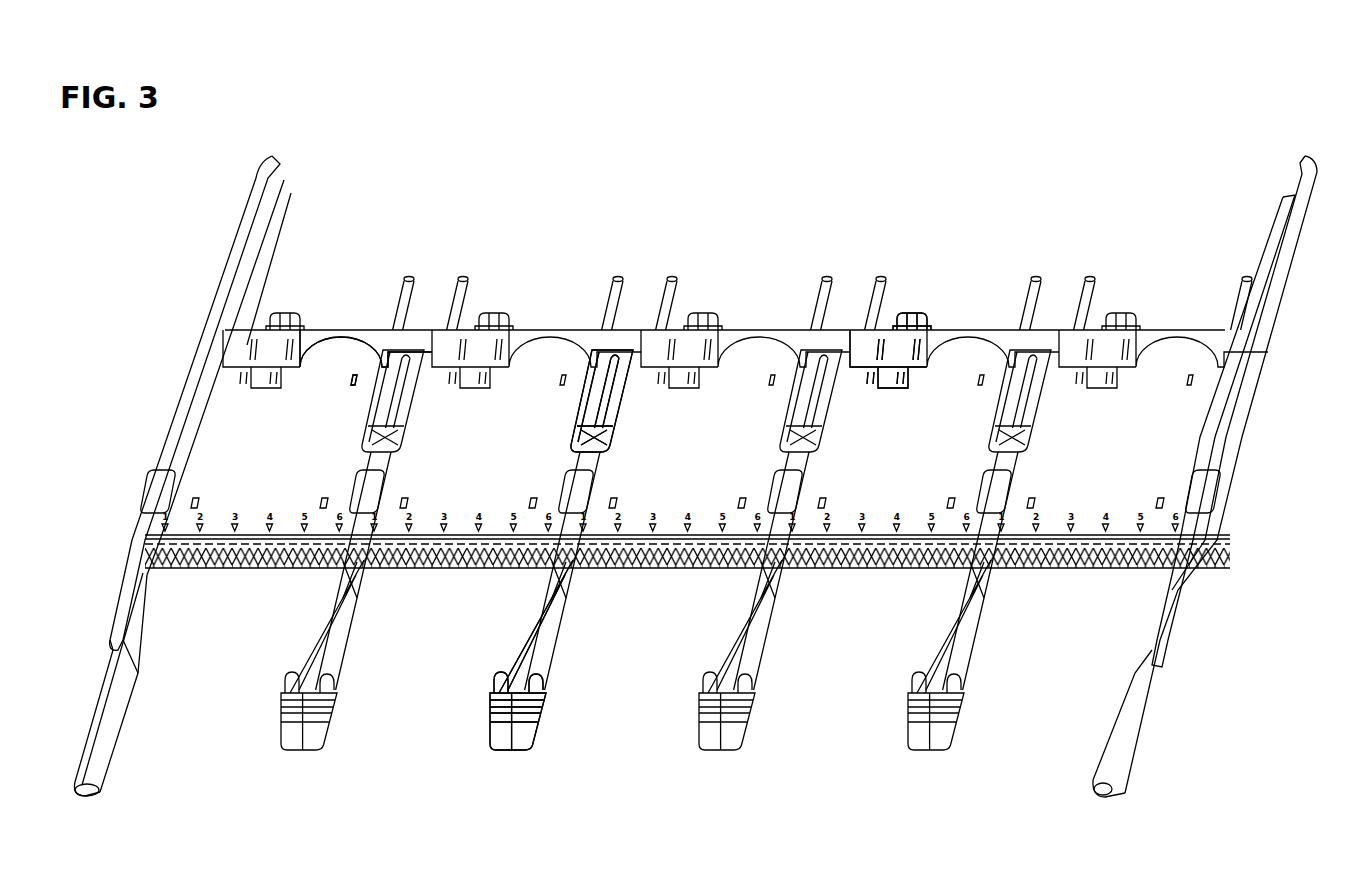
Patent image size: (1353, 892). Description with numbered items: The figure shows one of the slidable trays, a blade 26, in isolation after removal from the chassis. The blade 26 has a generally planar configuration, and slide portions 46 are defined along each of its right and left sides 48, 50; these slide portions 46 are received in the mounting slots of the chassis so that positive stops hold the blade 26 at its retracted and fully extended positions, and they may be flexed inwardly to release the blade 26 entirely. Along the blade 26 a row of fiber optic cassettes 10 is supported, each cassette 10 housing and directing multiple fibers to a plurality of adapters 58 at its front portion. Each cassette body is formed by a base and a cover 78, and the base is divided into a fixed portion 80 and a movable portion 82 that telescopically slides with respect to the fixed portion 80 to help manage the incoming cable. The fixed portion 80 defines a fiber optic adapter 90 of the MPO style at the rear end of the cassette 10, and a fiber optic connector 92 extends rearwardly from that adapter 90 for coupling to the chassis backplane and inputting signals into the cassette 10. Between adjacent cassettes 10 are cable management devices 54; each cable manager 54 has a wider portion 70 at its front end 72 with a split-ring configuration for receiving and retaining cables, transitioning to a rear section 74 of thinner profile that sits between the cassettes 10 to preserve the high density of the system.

The fiber optic cassette 10 is at (534, 350).
The blade 26 is at (1217, 476).
The slide portion 46 is at (1240, 446).
The right side 48 is at (1280, 359).
The left side 50 is at (155, 424).
The cable management device 54 is at (534, 728).
The adapter 58 is at (672, 594).
The wider portion 70 is at (509, 686).
The front end 72 is at (478, 722).
The rear section 74 is at (560, 596).
The cover 78 is at (884, 512).
The fixed portion 80 is at (305, 343).
The movable portion 82 is at (320, 414).
The fiber optic adapter 90 is at (902, 357).
The fiber optic connector 92 is at (908, 313).